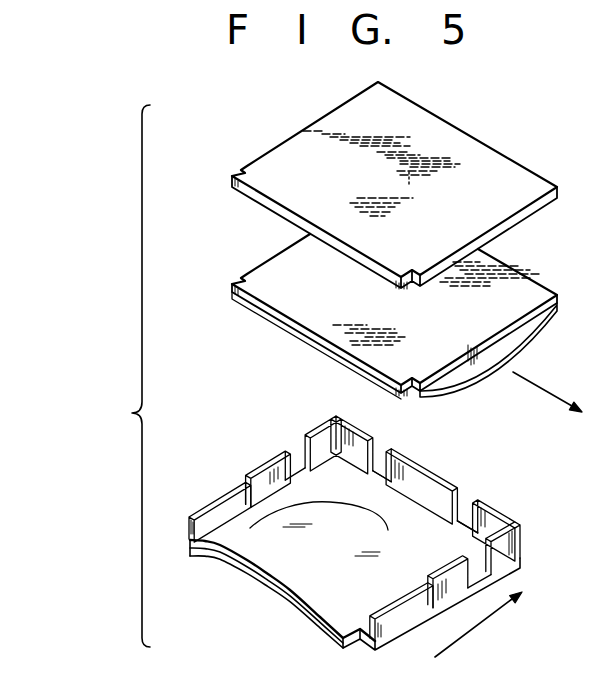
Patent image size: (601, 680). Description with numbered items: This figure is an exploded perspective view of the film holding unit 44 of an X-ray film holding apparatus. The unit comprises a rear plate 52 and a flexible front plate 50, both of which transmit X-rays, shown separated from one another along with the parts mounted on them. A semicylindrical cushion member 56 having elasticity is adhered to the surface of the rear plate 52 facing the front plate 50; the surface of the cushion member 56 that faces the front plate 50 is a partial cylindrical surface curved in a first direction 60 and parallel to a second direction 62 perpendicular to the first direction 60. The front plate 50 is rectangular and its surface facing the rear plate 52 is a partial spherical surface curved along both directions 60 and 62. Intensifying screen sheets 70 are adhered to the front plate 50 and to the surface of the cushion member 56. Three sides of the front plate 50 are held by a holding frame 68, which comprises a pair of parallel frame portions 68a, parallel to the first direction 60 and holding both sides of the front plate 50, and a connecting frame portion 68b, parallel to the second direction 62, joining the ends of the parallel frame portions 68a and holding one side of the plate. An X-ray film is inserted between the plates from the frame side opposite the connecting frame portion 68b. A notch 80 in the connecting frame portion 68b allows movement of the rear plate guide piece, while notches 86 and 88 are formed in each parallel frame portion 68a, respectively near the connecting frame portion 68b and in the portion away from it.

The film holding unit 44 is at (123, 376).
The rear plate 52 is at (496, 163).
The semicylindrical cushion member 56 is at (517, 292).
The intensifying screen sheets 70 is at (490, 368).
The front plate 50 is at (311, 616).
The holding frame 68 is at (389, 519).
The parallel frame portions 68a is at (318, 430).
The connecting frame portion 68b is at (432, 472).
The notch 86 is at (288, 452).
The notch 88 is at (228, 495).
The notch 80 is at (380, 458).
The second direction 62 is at (546, 392).
The first direction 60 is at (500, 610).